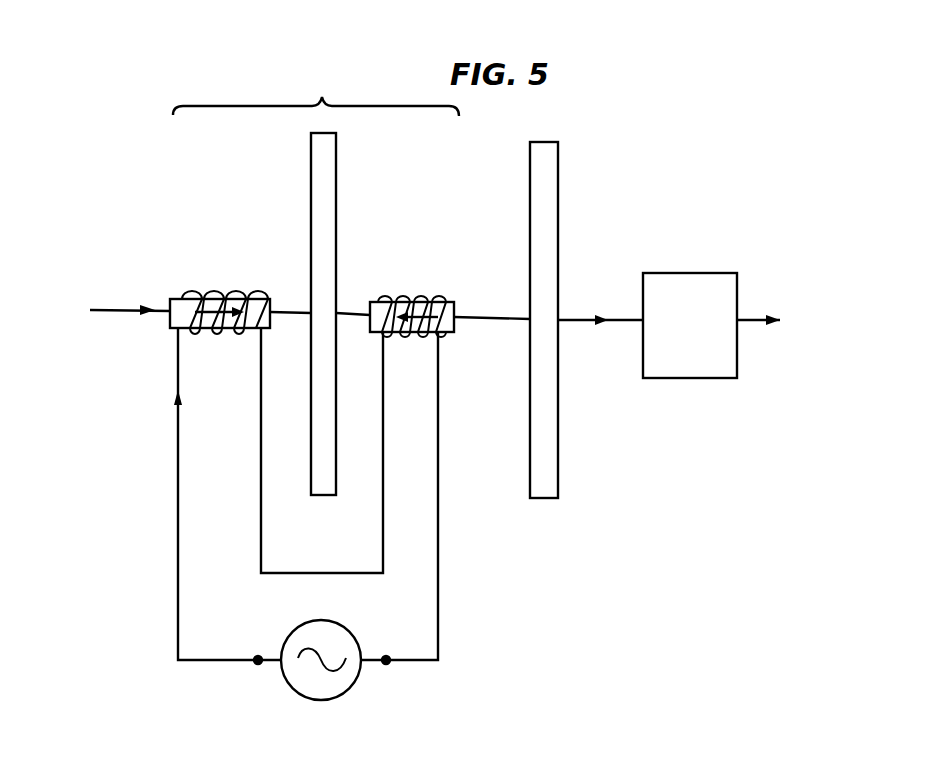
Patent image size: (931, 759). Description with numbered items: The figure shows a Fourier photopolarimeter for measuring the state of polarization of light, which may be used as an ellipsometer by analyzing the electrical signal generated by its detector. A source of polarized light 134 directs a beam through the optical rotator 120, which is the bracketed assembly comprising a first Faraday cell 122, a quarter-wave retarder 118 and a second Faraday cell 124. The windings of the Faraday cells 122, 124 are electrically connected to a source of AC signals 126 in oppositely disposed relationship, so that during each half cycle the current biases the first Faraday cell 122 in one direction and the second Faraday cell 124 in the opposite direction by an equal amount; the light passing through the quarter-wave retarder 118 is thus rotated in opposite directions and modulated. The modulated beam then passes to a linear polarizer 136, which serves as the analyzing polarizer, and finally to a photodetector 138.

The quarter-wave retarder 118 is at (337, 178).
The optical rotator 120 is at (316, 93).
The first Faraday cell 122 is at (240, 307).
The second Faraday cell 124 is at (428, 308).
The source of AC signals 126 is at (340, 670).
The source of polarized light 134 is at (121, 310).
The linear polarizer 136 is at (559, 168).
The photodetector 138 is at (725, 303).